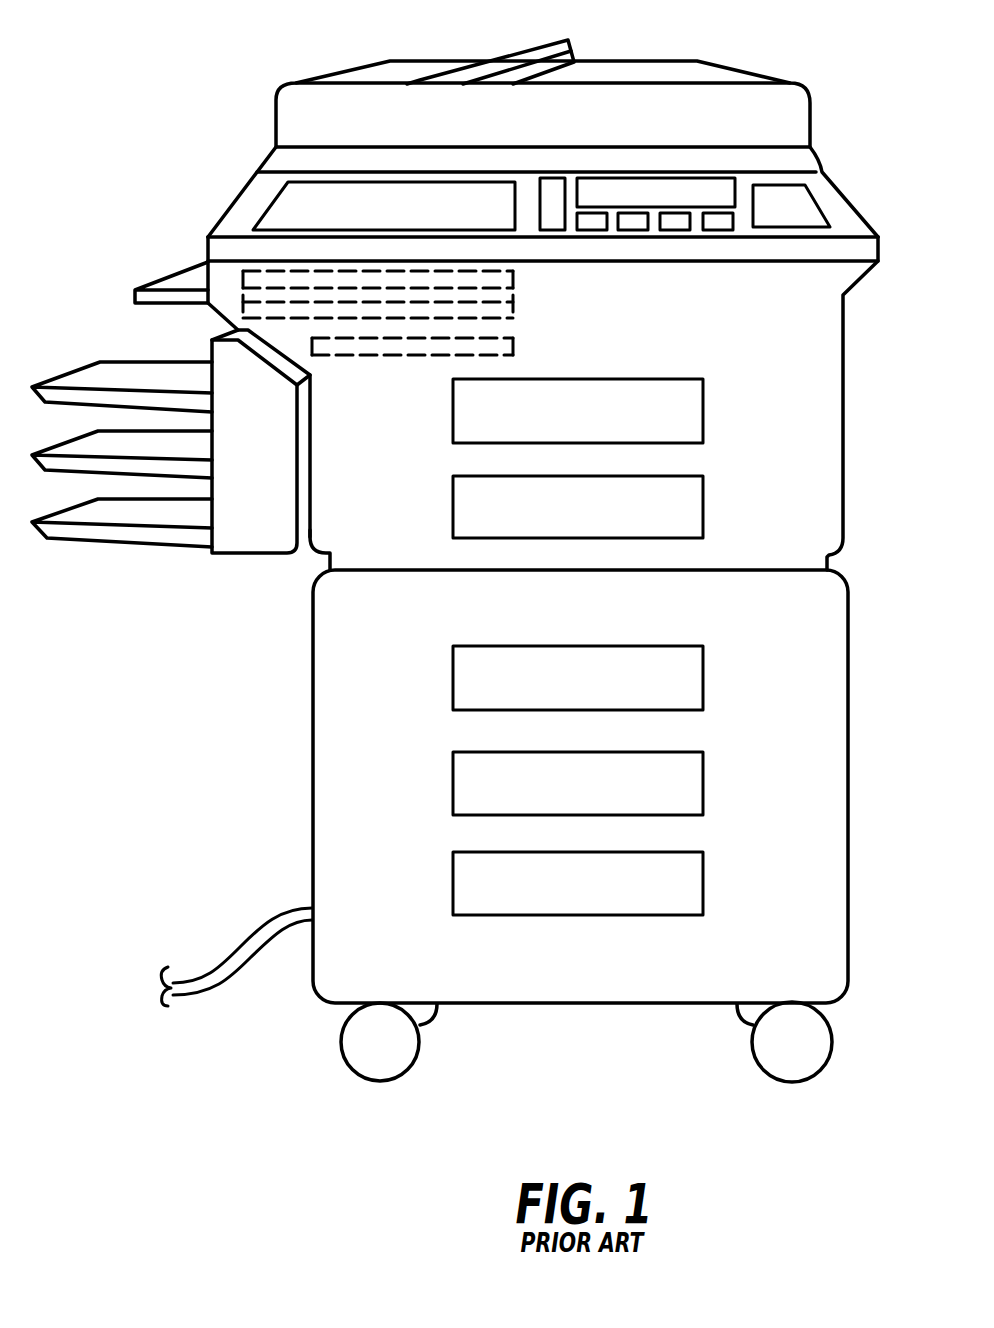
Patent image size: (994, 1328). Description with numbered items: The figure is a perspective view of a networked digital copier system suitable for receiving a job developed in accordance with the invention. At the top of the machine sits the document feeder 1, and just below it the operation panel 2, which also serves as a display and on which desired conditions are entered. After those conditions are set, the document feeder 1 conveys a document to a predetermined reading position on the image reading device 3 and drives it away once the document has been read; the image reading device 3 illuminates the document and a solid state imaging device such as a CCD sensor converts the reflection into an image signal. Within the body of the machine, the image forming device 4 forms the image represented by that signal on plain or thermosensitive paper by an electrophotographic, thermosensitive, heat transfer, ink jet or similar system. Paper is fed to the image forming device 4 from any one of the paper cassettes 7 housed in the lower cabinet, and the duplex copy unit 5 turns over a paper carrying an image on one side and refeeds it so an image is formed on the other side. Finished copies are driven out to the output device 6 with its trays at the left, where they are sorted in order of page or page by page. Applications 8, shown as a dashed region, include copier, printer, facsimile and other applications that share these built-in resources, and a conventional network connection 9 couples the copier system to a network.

The document feeder 1 is at (791, 103).
The operation panel 2 is at (288, 185).
The image reading device 3 is at (226, 187).
The image forming device 4 is at (703, 389).
The duplex copy unit 5 is at (703, 503).
The output device 6 is at (140, 553).
The paper cassettes 7 is at (703, 668).
The applications 8 is at (546, 314).
The network connection 9 is at (232, 945).